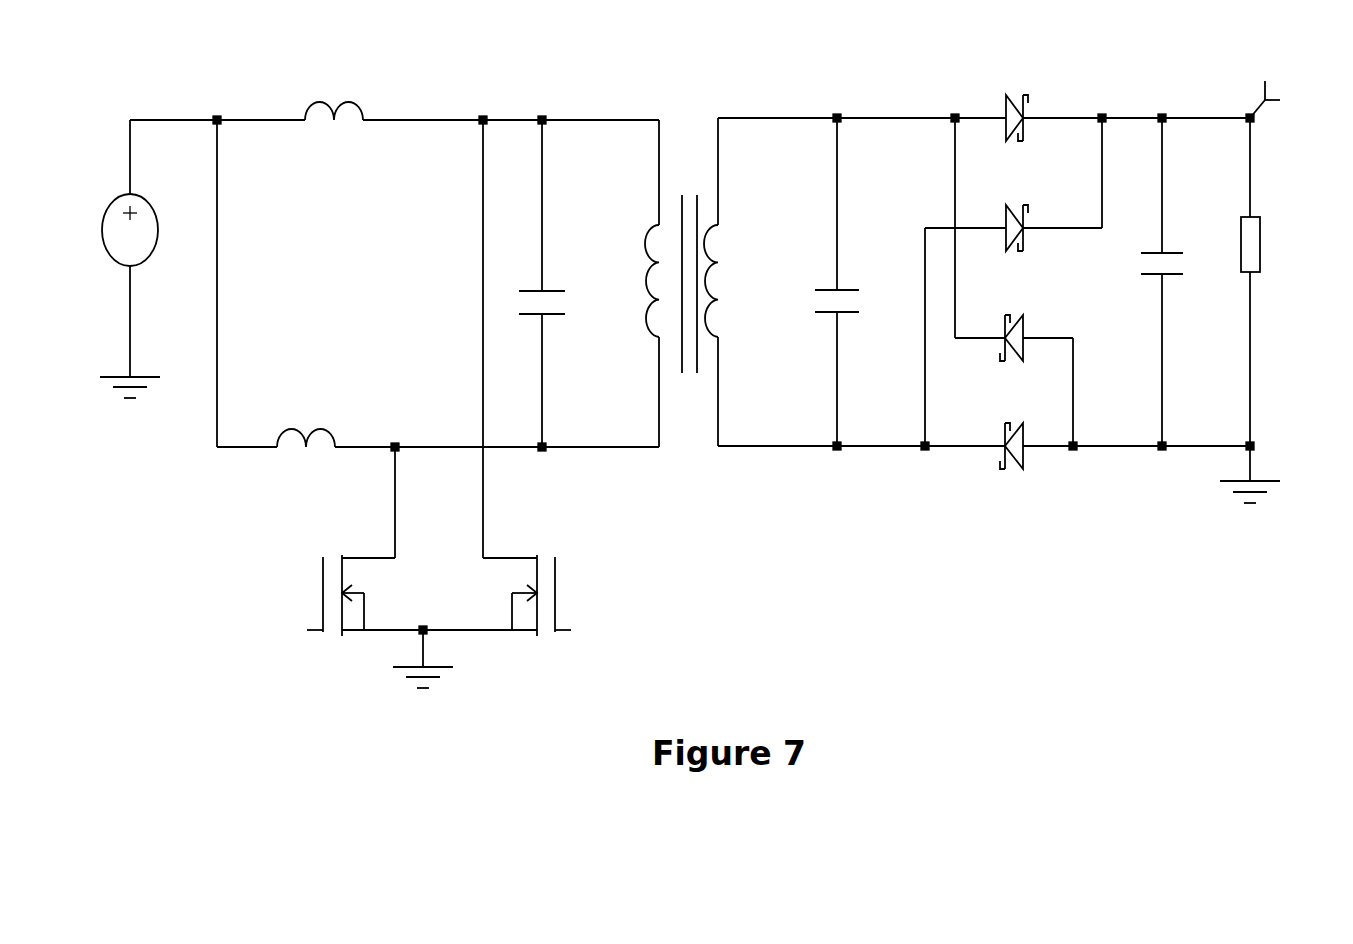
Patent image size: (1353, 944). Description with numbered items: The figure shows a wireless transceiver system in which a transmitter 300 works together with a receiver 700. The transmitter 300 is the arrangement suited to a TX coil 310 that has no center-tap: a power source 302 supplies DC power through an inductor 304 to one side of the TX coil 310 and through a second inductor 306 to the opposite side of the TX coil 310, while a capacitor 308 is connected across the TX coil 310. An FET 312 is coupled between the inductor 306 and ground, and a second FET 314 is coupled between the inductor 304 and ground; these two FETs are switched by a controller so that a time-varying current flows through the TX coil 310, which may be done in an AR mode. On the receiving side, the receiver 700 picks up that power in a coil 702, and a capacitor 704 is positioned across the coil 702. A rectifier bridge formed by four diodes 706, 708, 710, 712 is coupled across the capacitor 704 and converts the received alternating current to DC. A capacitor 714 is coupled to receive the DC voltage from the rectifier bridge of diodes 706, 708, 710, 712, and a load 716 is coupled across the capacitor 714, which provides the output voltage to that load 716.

The transmitter 300 is at (180, 550).
The power source 302 is at (110, 237).
The inductor 304 is at (357, 113).
The inductor 306 is at (320, 413).
The capacitor 308 is at (550, 268).
The TX coil 310 is at (635, 213).
The FET 312 is at (307, 575).
The FET 314 is at (556, 595).
The receiver 700 is at (1005, 515).
The coil 702 is at (725, 235).
The capacitor 704 is at (795, 308).
The diode 706 is at (1005, 110).
The diode 708 is at (1025, 233).
The diode 710 is at (1030, 325).
The diode 712 is at (990, 438).
The capacitor 714 is at (1171, 271).
The load 716 is at (1253, 251).